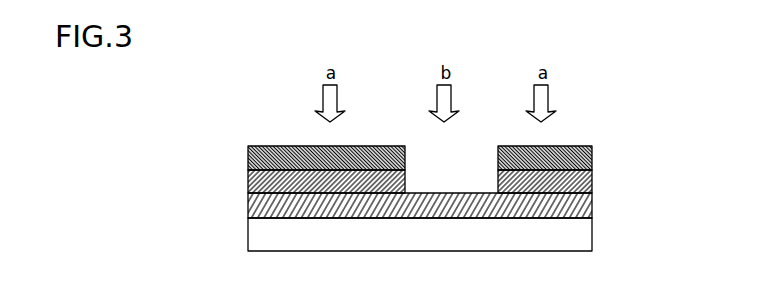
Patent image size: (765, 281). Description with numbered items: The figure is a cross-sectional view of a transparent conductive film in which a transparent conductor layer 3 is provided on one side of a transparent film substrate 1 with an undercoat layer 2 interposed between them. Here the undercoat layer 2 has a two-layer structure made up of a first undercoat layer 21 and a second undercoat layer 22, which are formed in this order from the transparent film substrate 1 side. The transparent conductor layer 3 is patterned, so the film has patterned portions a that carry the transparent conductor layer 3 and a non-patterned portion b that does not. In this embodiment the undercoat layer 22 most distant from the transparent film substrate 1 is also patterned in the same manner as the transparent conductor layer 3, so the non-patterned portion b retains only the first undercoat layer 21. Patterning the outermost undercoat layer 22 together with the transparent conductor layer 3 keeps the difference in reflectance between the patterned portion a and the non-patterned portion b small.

The transparent film substrate 1 is at (583, 237).
The undercoat layer 2 is at (446, 193).
The first undercoat layer 21 is at (592, 207).
The second undercoat layer 22 is at (248, 183).
The transparent conductor layer 3 is at (248, 158).